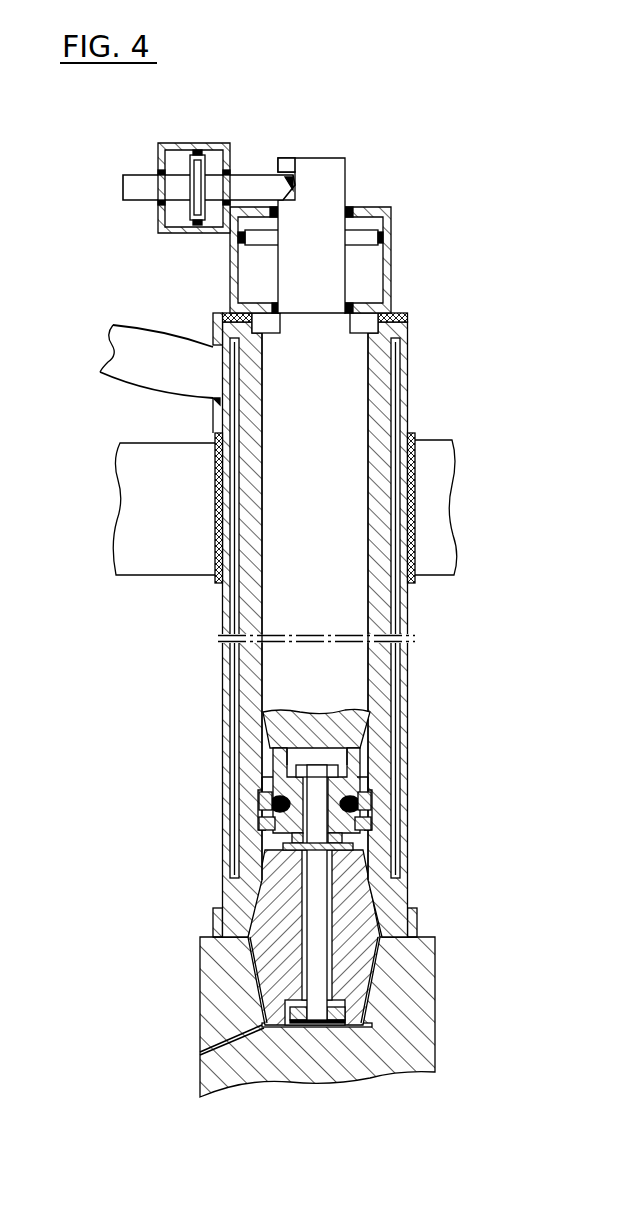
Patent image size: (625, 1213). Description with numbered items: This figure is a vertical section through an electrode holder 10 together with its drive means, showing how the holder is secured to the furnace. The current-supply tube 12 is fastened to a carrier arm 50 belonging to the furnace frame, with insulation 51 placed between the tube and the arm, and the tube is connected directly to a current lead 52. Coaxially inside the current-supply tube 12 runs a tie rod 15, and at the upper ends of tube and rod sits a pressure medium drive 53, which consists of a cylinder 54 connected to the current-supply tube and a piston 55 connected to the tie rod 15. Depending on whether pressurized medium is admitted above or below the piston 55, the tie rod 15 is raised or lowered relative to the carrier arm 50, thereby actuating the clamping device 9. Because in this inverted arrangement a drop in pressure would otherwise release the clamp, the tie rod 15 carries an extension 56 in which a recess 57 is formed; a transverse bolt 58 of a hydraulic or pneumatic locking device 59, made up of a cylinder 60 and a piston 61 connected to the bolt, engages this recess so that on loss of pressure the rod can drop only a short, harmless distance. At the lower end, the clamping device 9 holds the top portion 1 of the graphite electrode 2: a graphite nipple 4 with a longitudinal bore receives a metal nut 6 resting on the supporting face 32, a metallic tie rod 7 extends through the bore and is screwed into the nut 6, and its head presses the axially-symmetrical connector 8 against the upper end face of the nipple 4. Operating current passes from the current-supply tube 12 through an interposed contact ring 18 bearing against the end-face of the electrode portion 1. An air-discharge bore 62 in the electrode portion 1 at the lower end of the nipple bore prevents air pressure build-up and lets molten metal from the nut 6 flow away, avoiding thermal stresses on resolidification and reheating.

The top portion 1 is at (425, 975).
The graphite electrode 2 is at (447, 1040).
The nipple 4 is at (270, 975).
The nut 6 is at (302, 1028).
The tie rod 7 is at (315, 942).
The connector 8 is at (338, 783).
The clamping device 9 is at (270, 837).
The electrode holder 10 is at (422, 707).
The current-supply tube 12 is at (403, 614).
The tie rod 15 is at (357, 400).
The contact ring 18 is at (418, 922).
The supporting face 32 is at (352, 1000).
The carrier arm 50 is at (152, 565).
The insulation 51 is at (415, 497).
The current lead 52 is at (137, 348).
The pressure medium drive 53 is at (373, 178).
The cylinder 54 is at (390, 257).
The piston 55 is at (358, 233).
The extension 56 is at (332, 163).
The recess 57 is at (285, 167).
The transverse bolt 58 is at (248, 178).
The locking device 59 is at (201, 128).
The cylinder 60 is at (172, 142).
The piston 61 is at (192, 207).
The air-discharge bore 62 is at (200, 1052).